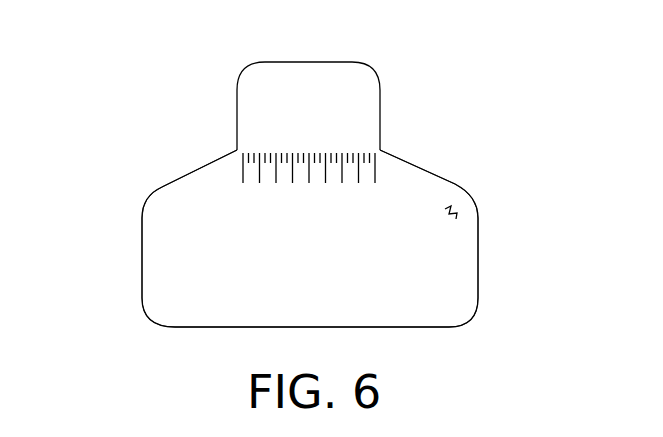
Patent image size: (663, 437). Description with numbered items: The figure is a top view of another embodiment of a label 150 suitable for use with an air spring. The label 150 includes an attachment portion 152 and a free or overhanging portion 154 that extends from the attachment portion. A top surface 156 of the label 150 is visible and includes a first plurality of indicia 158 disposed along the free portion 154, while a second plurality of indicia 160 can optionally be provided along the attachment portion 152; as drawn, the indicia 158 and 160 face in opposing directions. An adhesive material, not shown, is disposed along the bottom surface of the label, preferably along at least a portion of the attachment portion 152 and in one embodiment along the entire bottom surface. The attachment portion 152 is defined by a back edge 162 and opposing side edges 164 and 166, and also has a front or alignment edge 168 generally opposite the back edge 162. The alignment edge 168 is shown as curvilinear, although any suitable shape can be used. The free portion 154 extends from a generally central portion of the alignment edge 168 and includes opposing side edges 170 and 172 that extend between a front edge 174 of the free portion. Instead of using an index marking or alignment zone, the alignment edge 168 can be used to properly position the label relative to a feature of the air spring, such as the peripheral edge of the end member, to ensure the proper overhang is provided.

The label 150 is at (316, 193).
The attachment portion 152 is at (166, 277).
The free portion 154 is at (247, 82).
The top surface 156 is at (468, 203).
The first plurality of indicia 158 is at (372, 96).
The second plurality of indicia 160 is at (423, 266).
The back edge 162 is at (208, 327).
The side edge 164 is at (142, 256).
The side edge 166 is at (478, 257).
The alignment edge 168 is at (413, 163).
The side edge 170 is at (237, 124).
The side edge 172 is at (380, 126).
The front edge 174 is at (303, 62).